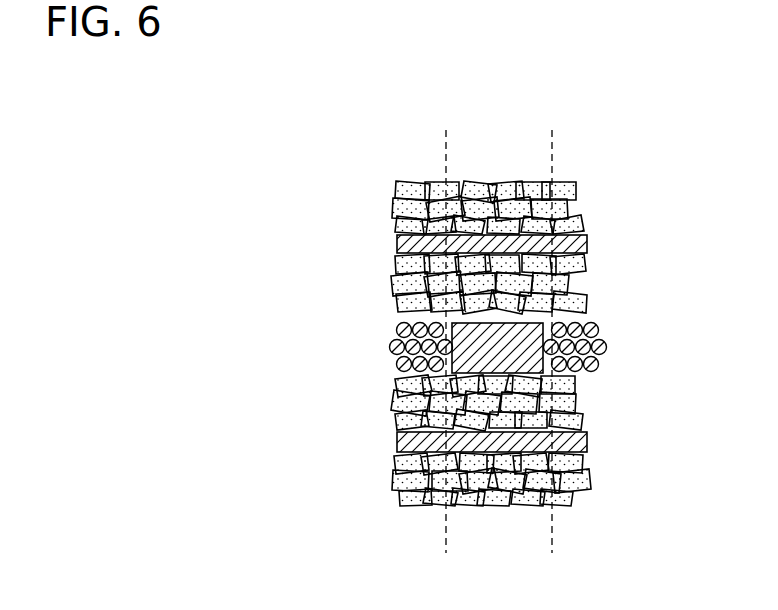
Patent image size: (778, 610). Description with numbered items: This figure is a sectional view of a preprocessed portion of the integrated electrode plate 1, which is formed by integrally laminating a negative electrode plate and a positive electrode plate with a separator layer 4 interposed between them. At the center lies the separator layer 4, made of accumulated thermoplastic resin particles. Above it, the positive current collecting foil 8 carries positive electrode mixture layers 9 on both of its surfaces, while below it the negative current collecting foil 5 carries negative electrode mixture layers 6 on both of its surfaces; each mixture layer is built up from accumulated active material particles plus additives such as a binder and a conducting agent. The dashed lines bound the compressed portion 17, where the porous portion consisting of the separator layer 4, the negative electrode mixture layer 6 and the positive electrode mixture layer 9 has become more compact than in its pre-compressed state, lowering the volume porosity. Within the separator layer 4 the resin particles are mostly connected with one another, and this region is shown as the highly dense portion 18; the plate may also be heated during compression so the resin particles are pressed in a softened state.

The integrated electrode plate 1 is at (392, 507).
The separator layer 4 is at (395, 348).
The negative current collecting foil 5 is at (587, 446).
The negative electrode mixture layers 6 is at (383, 380).
The positive current collecting foil 8 is at (587, 245).
The positive electrode mixture layers 9 is at (383, 183).
The compressed portion 17 is at (557, 118).
The highly dense portion 18 is at (606, 345).